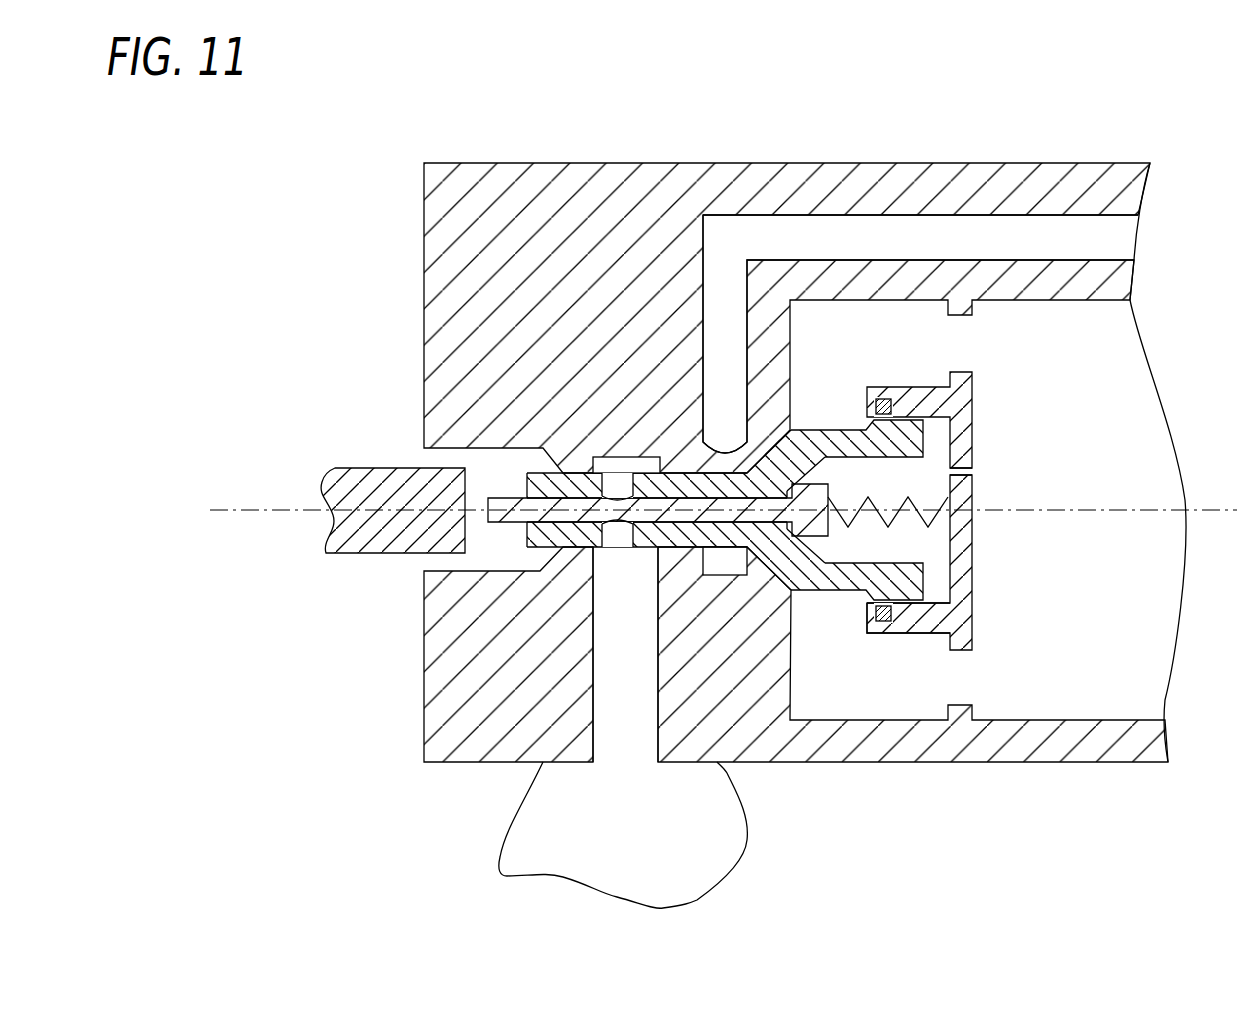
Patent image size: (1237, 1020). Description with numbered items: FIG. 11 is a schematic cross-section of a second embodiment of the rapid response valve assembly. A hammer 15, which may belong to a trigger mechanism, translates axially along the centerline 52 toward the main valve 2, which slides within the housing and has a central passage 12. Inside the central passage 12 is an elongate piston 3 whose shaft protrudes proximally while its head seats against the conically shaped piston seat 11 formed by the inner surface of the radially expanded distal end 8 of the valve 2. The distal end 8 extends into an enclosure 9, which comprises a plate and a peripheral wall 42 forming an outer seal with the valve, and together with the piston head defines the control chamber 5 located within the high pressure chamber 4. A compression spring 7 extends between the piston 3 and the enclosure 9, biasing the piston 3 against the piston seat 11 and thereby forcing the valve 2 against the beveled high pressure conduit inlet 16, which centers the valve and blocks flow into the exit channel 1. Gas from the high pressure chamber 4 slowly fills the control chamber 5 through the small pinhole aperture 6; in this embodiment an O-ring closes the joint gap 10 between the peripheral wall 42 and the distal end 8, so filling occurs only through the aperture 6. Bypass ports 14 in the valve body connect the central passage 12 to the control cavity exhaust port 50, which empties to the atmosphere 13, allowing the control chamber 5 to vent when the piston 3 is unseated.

The exit channel 1 is at (727, 246).
The main valve 2 is at (795, 450).
The piston 3 is at (803, 467).
The high pressure chamber 4 is at (922, 330).
The control chamber 5 is at (923, 469).
The pinhole aperture 6 is at (983, 473).
The compression spring 7 is at (948, 498).
The distal end 8 is at (922, 580).
The enclosure 9 is at (972, 602).
The gap 10 is at (906, 606).
The piston seat 11 is at (793, 540).
The central passage 12 is at (732, 525).
The atmosphere 13 is at (692, 845).
The bypass port 14 is at (620, 547).
The hammer 15 is at (410, 466).
The high pressure conduit inlet 16 is at (784, 437).
The peripheral wall 42 is at (884, 623).
The control cavity exhaust port 50 is at (597, 740).
The centerline 52 is at (215, 508).